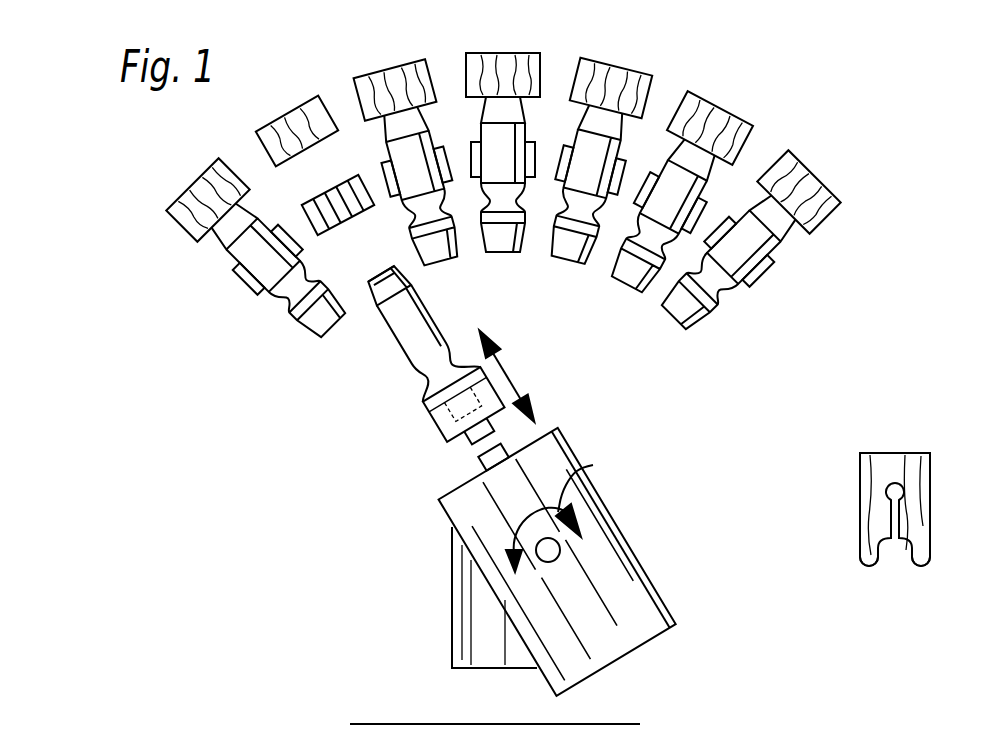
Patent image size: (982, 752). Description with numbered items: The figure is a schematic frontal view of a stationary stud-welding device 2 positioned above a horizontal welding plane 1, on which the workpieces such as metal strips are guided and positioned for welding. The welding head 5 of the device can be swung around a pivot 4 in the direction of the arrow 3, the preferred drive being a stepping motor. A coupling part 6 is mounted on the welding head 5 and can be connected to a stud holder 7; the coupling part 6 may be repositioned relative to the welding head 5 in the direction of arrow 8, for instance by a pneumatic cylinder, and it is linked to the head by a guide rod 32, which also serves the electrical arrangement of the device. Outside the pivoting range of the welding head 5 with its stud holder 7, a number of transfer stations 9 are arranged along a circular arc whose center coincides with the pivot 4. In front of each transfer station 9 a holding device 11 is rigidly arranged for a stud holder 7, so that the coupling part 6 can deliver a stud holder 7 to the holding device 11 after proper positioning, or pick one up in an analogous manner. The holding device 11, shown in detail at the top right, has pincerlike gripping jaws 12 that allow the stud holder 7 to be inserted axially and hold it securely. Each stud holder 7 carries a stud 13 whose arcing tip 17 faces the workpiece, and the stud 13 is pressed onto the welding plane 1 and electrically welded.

The horizontal welding plane 1 is at (382, 722).
The stud-welding device 2 is at (444, 581).
The arrow 3 is at (585, 480).
The pivot 4 is at (560, 551).
The welding head 5 is at (625, 590).
The coupling part 6 is at (433, 424).
The stud holder 7 is at (326, 328).
The arrow 8 is at (507, 373).
The transfer station 9 is at (198, 185).
The holding device 11 is at (248, 280).
The pincerlike gripping jaws 12 is at (877, 562).
The stud 13 is at (368, 276).
The arcing tip 17 is at (378, 270).
The guide rod 32 is at (473, 446).